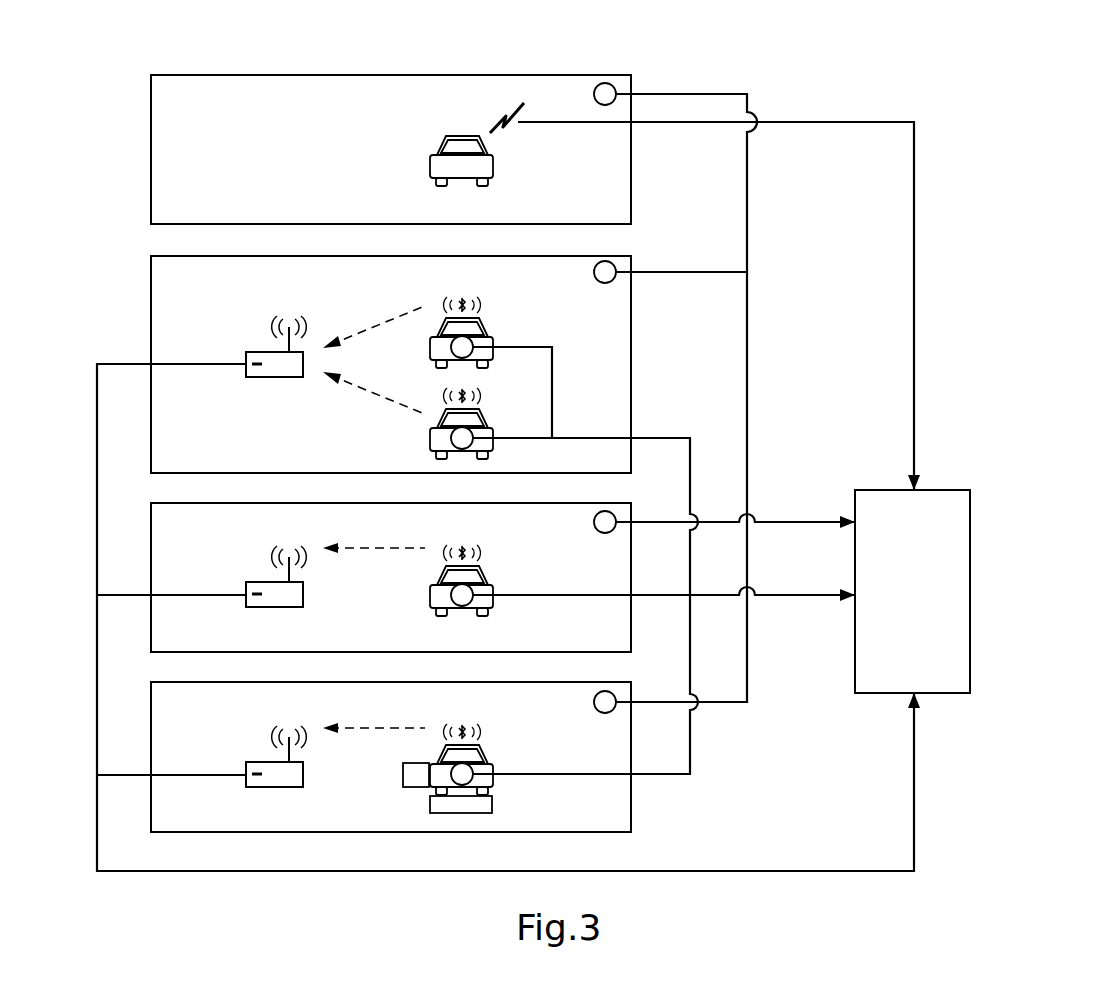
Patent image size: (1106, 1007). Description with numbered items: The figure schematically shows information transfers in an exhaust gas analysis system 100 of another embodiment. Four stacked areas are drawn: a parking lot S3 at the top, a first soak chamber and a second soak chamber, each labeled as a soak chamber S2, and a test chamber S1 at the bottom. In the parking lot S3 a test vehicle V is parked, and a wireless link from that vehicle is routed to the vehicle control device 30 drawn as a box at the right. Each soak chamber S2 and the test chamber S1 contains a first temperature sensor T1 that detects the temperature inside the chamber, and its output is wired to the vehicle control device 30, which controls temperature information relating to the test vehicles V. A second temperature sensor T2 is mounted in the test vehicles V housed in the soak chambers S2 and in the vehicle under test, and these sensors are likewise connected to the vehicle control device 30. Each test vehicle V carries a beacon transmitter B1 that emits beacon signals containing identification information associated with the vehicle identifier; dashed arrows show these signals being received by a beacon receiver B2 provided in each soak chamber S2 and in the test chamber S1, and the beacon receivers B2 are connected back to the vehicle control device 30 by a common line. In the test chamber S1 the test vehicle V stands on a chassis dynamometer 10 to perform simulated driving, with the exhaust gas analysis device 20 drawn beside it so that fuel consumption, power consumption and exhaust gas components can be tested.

The exhaust gas analysis system 100 is at (990, 108).
The chassis dynamometer 10 is at (493, 806).
The exhaust gas analysis device 20 is at (402, 777).
The vehicle control device 30 is at (933, 490).
The test vehicle V is at (478, 467).
The first temperature sensor T1 is at (605, 398).
The second temperature sensor T2 is at (462, 560).
The beacon transmitter B1 is at (462, 507).
The beacon receiver B2 is at (271, 808).
The test chamber S1 is at (391, 757).
The soak chamber S2 is at (391, 454).
The outdoor parking lot S3 is at (391, 149).